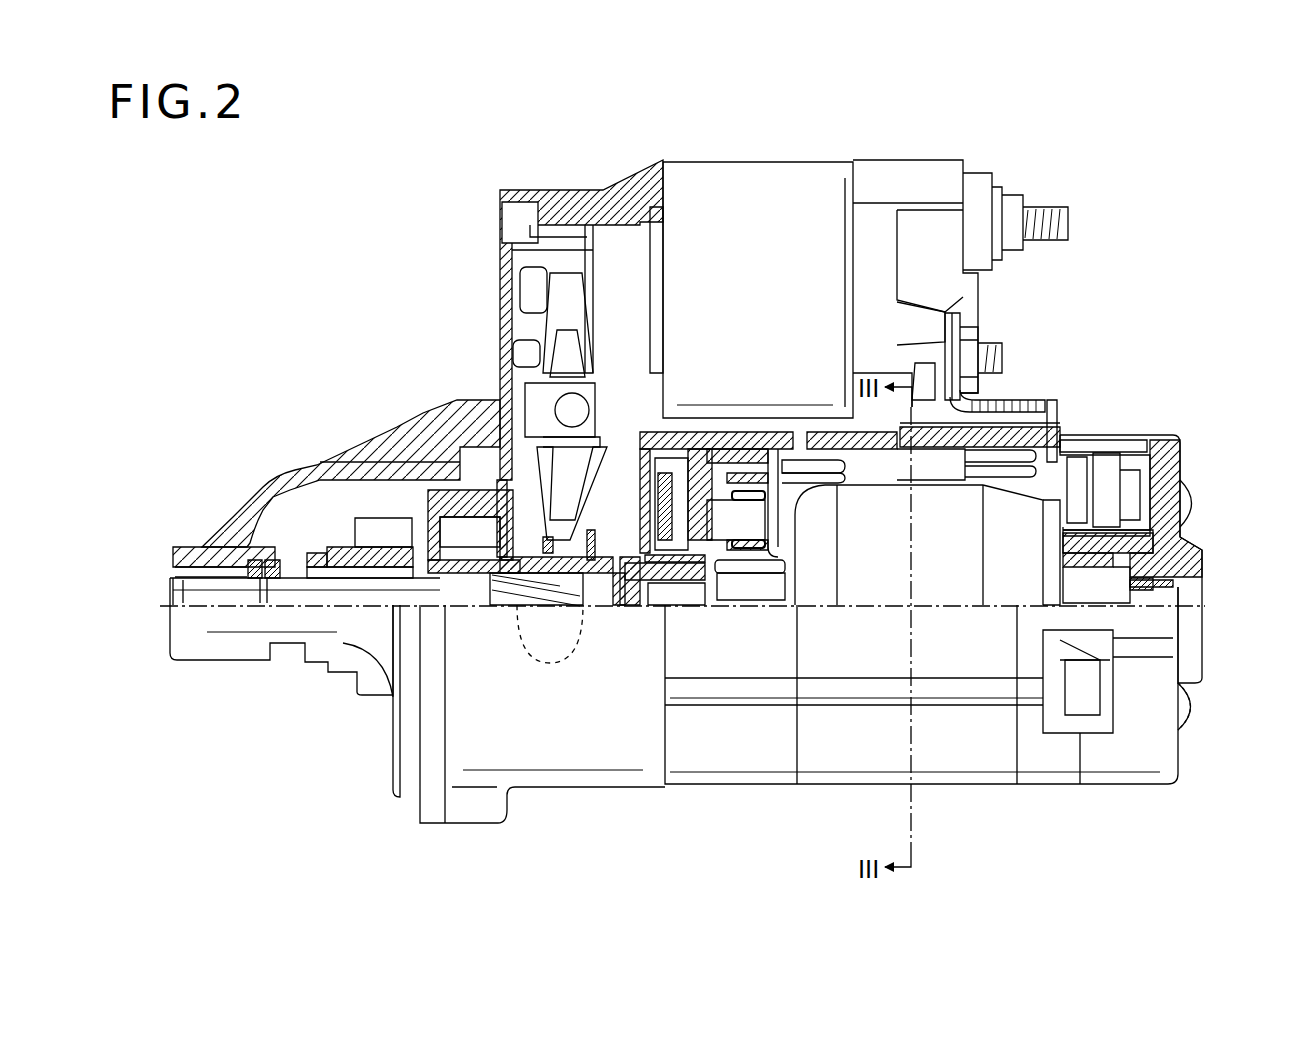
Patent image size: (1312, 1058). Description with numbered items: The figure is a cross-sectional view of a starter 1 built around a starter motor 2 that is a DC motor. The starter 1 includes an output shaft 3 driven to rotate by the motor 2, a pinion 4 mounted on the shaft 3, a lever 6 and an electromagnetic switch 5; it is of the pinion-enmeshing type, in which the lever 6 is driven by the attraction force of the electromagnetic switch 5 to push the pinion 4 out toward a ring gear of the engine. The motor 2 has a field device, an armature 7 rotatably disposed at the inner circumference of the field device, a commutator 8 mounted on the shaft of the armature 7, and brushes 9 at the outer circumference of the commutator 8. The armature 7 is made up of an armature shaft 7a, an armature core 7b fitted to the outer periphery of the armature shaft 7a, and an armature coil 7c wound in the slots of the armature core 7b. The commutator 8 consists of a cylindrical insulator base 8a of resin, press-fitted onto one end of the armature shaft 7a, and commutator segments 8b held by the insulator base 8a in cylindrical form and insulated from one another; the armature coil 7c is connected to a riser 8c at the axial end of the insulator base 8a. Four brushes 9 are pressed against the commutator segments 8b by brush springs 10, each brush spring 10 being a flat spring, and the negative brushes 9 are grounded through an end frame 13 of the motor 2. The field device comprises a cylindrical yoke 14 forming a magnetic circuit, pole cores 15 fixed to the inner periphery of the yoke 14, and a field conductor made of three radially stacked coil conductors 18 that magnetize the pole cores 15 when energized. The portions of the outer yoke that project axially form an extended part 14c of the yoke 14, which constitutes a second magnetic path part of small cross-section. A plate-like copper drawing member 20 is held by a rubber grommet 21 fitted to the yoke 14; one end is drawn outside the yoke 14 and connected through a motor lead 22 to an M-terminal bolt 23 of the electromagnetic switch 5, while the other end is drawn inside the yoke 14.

The starter 1 is at (395, 184).
The starter motor 2 is at (978, 790).
The output shaft 3 is at (358, 593).
The pinion 4 is at (373, 527).
The electromagnetic switch 5 is at (801, 160).
The lever 6 is at (550, 362).
The armature 7 is at (847, 838).
The armature shaft 7a is at (757, 593).
The armature core 7b is at (878, 590).
The armature coil 7c is at (820, 593).
The commutator 8 is at (1260, 550).
The insulator base 8a is at (1087, 565).
The commutator segments 8b is at (1123, 540).
The riser 8c is at (1050, 518).
The brushes 9 is at (1133, 457).
The brush spring 10 is at (1110, 467).
The end frame 13 is at (1167, 510).
The yoke 14 is at (830, 445).
The extended part 14c is at (995, 445).
The pole cores 15 is at (948, 470).
The coil conductors 18 is at (800, 462).
The drawing member 20 is at (1052, 455).
The grommet 21 is at (1082, 458).
The motor lead 22 is at (1003, 393).
The M-terminal bolt 23 is at (1000, 345).